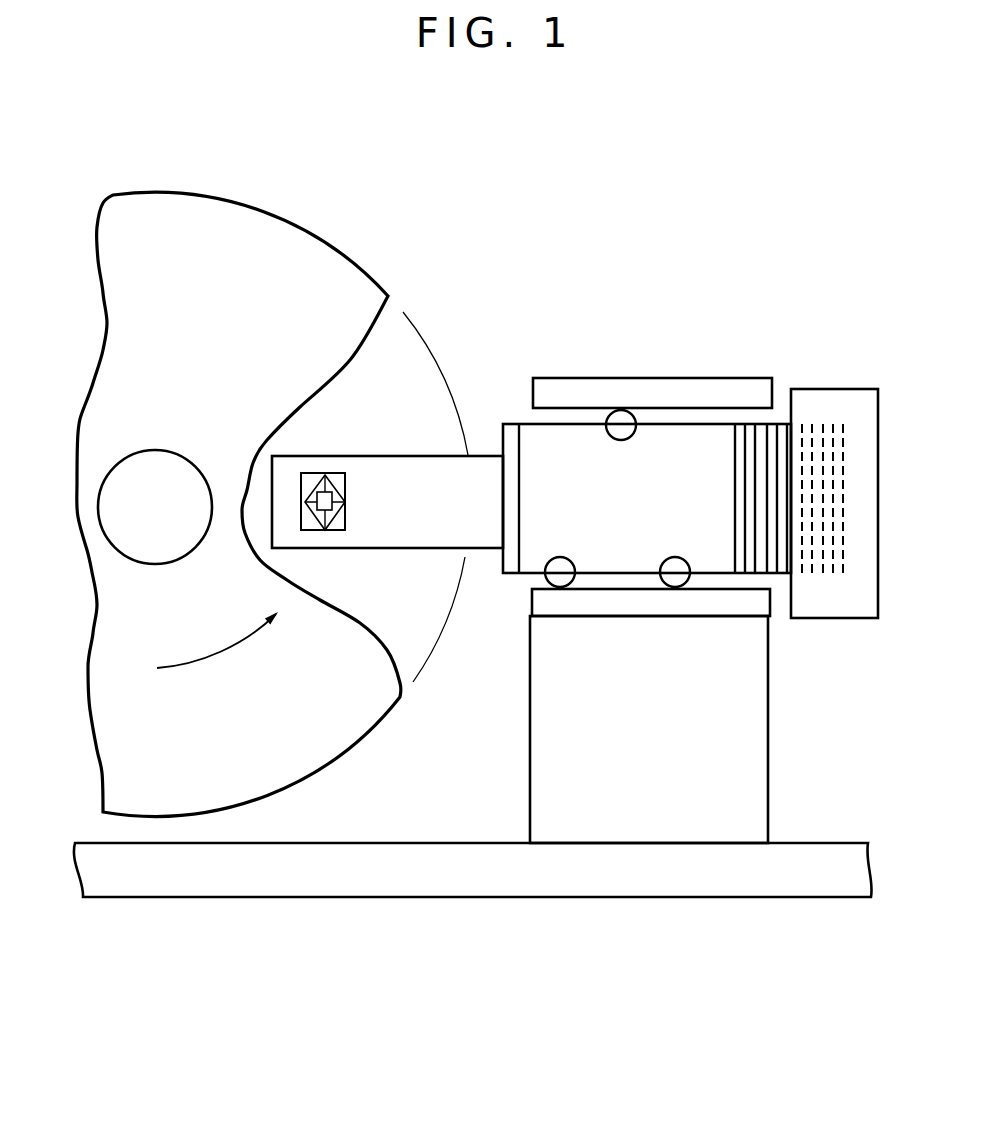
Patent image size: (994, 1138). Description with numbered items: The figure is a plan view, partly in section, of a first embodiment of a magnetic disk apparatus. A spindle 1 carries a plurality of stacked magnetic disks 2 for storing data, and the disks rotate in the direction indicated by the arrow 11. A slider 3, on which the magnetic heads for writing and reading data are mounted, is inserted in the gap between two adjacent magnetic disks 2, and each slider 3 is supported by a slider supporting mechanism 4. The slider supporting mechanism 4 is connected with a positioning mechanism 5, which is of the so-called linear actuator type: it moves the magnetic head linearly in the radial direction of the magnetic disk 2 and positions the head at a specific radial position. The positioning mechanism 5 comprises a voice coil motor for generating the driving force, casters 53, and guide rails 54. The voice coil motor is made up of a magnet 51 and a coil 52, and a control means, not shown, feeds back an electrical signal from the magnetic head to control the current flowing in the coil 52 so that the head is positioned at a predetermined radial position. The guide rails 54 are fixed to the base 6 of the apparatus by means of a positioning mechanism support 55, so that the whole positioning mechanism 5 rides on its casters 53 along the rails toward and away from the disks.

The spindle 1 is at (168, 542).
The magnetic disk 2 is at (253, 225).
The slider 3 is at (333, 484).
The slider supporting mechanism 4 is at (432, 444).
The positioning mechanism 5 is at (665, 371).
The base 6 is at (758, 882).
The arrow 11 is at (195, 667).
The magnet 51 is at (843, 405).
The coil 52 is at (775, 432).
The casters 53 is at (555, 575).
The guide rails 54 is at (578, 387).
The positioning mechanism support 55 is at (748, 773).